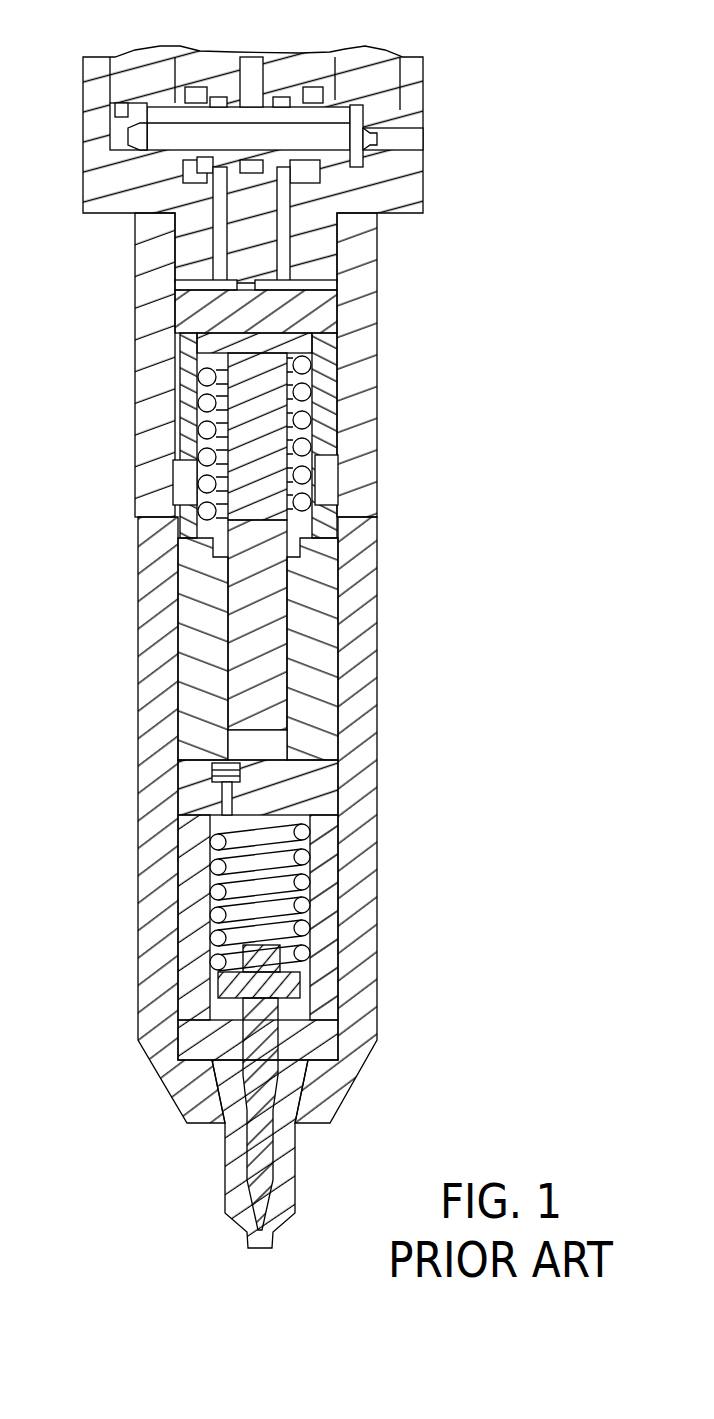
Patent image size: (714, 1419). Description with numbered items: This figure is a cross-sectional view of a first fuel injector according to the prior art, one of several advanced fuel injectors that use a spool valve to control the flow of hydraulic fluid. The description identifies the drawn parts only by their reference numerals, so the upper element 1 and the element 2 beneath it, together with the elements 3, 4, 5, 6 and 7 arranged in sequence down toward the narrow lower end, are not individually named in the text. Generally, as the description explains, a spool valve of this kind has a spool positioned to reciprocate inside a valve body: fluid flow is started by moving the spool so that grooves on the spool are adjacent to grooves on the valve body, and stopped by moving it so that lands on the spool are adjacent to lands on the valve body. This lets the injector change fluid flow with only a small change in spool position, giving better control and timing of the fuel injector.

The injector top block / actuator housing 1 is at (363, 78).
The injector body 2 is at (358, 353).
The plate / spacer 3 is at (250, 308).
The control piston and spring 4 is at (253, 477).
The nozzle retaining nut 5 is at (368, 637).
The intermediate plate with check valve 6 is at (253, 802).
The nozzle needle 7 is at (263, 1053).